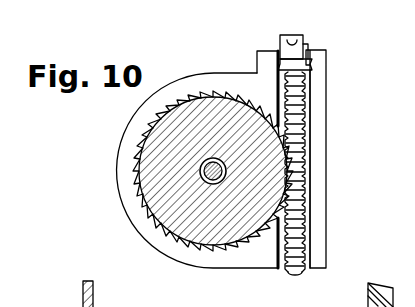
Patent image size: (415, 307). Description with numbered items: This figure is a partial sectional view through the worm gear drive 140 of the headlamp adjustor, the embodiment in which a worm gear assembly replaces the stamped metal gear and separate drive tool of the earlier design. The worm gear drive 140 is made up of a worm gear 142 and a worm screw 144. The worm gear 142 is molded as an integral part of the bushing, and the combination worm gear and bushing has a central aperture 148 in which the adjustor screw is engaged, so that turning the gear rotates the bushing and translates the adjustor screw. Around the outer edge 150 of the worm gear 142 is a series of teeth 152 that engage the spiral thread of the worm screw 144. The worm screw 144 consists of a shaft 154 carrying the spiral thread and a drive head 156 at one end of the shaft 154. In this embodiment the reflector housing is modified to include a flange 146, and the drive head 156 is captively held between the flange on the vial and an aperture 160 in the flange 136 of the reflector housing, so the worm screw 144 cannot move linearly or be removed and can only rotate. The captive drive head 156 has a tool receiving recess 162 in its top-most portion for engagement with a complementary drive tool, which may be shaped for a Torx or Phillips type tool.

The flange 136 is at (318, 240).
The worm gear drive 140 is at (242, 60).
The worm gear 142 is at (242, 218).
The worm screw 144 is at (300, 147).
The flange 146 is at (312, 66).
The central aperture 148 is at (208, 168).
The outer edge 150 is at (193, 92).
The teeth 152 is at (203, 88).
The shaft 154 is at (300, 208).
The drive head 156 is at (305, 50).
The aperture 160 is at (320, 66).
The tool receiving recess 162 is at (286, 35).